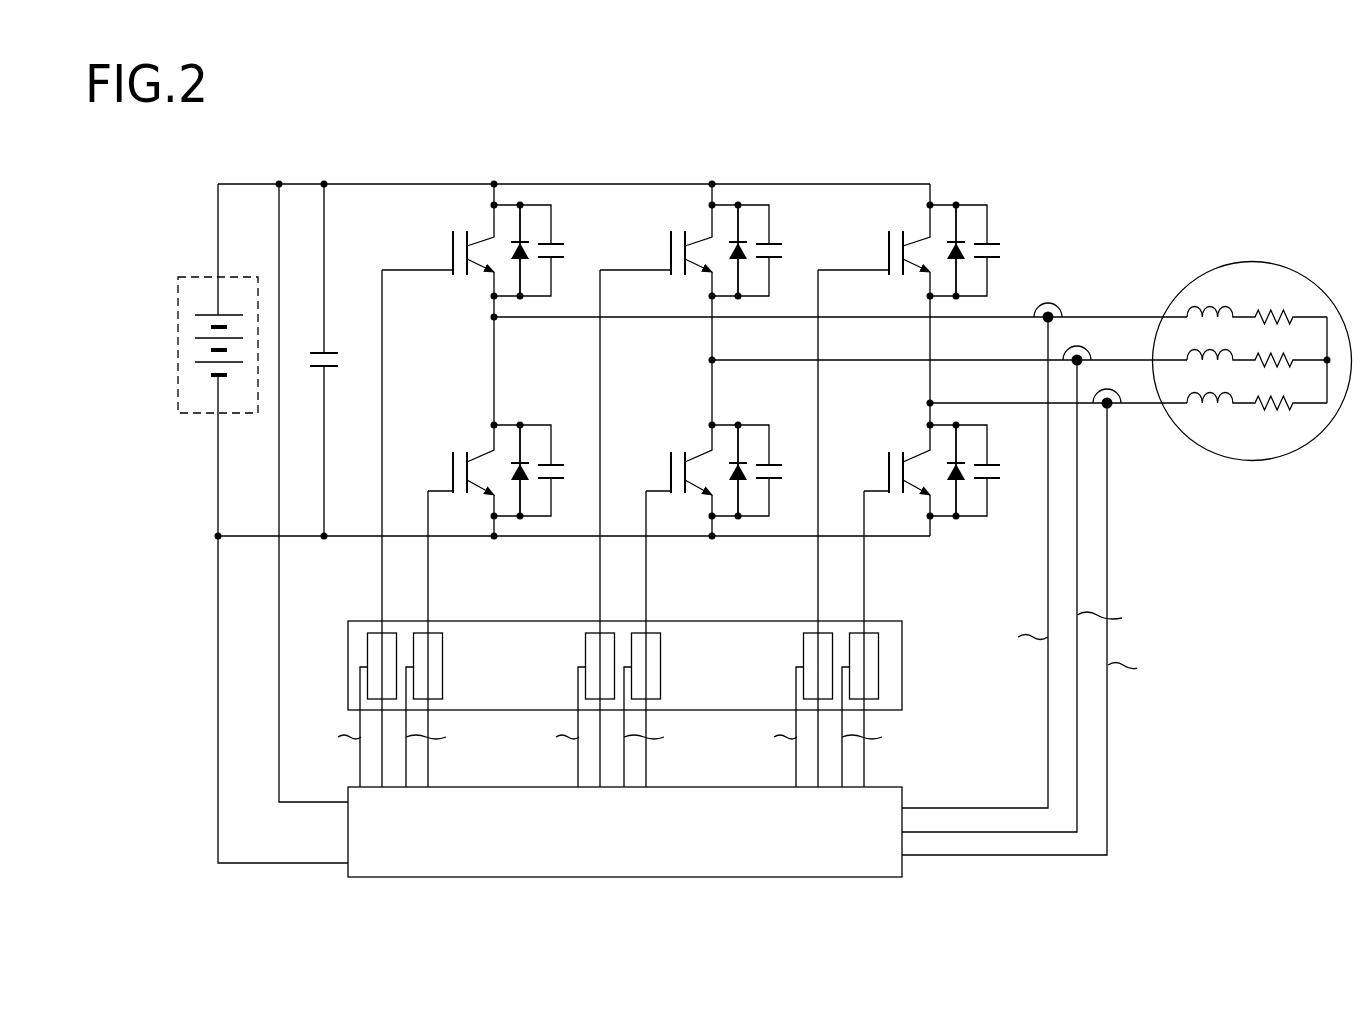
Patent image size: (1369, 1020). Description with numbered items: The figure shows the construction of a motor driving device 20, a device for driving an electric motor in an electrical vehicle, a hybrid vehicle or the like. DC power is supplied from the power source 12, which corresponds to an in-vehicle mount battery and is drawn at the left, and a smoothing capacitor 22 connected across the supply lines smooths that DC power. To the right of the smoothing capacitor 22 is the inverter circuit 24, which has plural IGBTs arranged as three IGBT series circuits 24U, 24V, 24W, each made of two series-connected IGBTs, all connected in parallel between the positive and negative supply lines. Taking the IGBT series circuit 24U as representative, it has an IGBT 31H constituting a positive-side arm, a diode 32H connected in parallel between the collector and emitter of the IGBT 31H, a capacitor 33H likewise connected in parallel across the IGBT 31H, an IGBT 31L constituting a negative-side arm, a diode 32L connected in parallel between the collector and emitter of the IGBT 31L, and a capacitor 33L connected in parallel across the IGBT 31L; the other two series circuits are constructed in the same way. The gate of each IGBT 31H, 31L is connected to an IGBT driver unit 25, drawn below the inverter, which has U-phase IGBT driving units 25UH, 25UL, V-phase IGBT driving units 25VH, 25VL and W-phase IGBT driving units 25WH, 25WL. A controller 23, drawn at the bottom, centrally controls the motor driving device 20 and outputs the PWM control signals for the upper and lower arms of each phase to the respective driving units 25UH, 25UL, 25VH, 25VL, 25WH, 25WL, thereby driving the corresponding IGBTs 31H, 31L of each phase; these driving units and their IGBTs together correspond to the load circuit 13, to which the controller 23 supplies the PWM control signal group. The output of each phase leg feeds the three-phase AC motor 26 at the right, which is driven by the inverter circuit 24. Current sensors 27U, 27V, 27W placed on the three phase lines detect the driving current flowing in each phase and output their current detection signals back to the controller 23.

The motor driving device 20 is at (1138, 85).
The load circuit 13 is at (1130, 765).
The power source 12 is at (195, 275).
The smoothing capacitor 22 is at (330, 354).
The inverter circuit 24 is at (1032, 123).
The IGBT series circuit 24U is at (563, 210).
The IGBT series circuit 24V is at (779, 211).
The IGBT series circuit 24W is at (977, 200).
The IGBT 31H is at (656, 255).
The IGBT 31L is at (675, 462).
The diode 32H is at (962, 250).
The diode 32L is at (962, 481).
The capacitor 33H is at (1002, 250).
The capacitor 33L is at (998, 465).
The IGBT driver unit 25 is at (902, 675).
The U-phase IGBT driving unit 25UH is at (351, 528).
The U-phase IGBT driving unit 25UL is at (454, 639).
The V-phase IGBT driving unit 25VH is at (569, 528).
The V-phase IGBT driving unit 25VL is at (671, 639).
The W-phase IGBT driving unit 25WH is at (786, 528).
The W-phase IGBT driving unit 25WL is at (893, 639).
The controller 23 is at (906, 796).
The three-phase AC motor 26 is at (1300, 272).
The current sensor 27U is at (1062, 317).
The current sensor 27V is at (1091, 360).
The current sensor 27W is at (1112, 408).